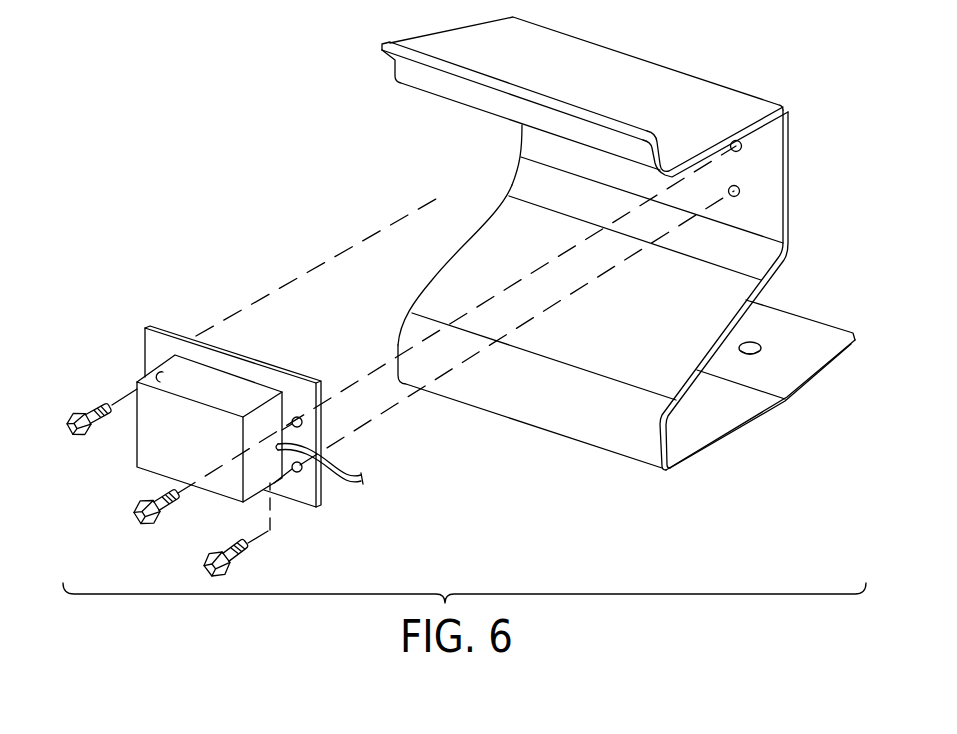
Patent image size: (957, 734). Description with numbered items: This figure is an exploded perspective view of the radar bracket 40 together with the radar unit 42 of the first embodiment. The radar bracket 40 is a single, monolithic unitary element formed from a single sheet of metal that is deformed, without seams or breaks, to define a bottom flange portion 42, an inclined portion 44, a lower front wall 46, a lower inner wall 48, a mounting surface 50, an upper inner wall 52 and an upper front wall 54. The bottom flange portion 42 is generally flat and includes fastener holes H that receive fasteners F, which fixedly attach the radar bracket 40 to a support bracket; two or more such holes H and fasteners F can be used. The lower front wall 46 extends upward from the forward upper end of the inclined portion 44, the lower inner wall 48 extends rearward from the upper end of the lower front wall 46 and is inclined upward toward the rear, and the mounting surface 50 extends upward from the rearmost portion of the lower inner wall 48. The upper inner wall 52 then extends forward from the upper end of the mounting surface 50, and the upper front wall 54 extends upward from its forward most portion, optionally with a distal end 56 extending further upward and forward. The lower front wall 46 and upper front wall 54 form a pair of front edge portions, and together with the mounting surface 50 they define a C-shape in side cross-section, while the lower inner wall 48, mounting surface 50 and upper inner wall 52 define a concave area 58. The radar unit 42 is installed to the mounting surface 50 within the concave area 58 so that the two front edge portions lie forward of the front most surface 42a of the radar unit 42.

The radar bracket 40 is at (668, 26).
The bottom flange portion 42 is at (803, 352).
The front most surface 42a is at (204, 446).
The inclined portion 44 is at (693, 427).
The lower front wall 46 is at (620, 442).
The lower inner wall 48 is at (467, 277).
The mounting surface 50 is at (760, 167).
The upper inner wall 52 is at (720, 140).
The upper front wall 54 is at (665, 152).
The distal end 56 is at (412, 60).
The concave area 58 is at (533, 182).
The fastener holes H is at (753, 338).
The fasteners F is at (108, 541).